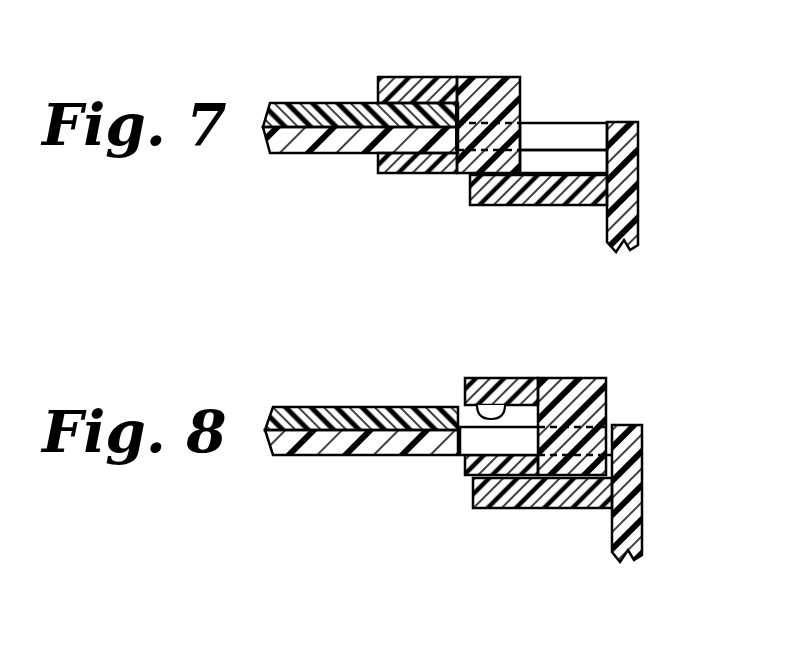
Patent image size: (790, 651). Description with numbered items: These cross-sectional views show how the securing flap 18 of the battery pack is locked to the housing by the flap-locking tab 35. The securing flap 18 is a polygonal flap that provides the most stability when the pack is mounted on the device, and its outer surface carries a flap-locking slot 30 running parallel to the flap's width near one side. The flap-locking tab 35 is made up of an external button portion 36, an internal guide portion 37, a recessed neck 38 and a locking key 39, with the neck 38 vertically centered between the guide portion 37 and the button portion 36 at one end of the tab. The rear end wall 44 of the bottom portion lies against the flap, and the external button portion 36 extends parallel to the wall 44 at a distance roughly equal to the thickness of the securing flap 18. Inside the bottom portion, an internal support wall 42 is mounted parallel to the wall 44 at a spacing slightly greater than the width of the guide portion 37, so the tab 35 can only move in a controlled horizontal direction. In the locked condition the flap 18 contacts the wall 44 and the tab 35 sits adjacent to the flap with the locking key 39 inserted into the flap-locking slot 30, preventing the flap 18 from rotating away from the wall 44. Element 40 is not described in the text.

In FIG. 7, the securing flap 18 is at (360, 132).
In FIG. 8, the securing flap 18 is at (361, 431).
In FIG. 8, the flap-locking slot 30 is at (402, 407).
In FIG. 7, the flap-locking tab 35 is at (500, 77).
In FIG. 8, the flap-locking tab 35 is at (585, 378).
In FIG. 7, the external button portion 36 is at (440, 77).
In FIG. 8, the internal guide portion 37 is at (461, 438).
In FIG. 7, the recessed neck 38 is at (622, 187).
In FIG. 8, the recessed neck 38 is at (600, 432).
In FIG. 8, the locking key 39 is at (492, 405).
In FIG. 7, the connector bar 40 is at (560, 135).
In FIG. 8, the connector bar 40 is at (536, 441).
In FIG. 7, the internal support wall 42 is at (513, 195).
In FIG. 8, the internal support wall 42 is at (542, 493).
In FIG. 7, the rear end wall 44 is at (355, 143).
In FIG. 8, the rear end wall 44 is at (355, 445).